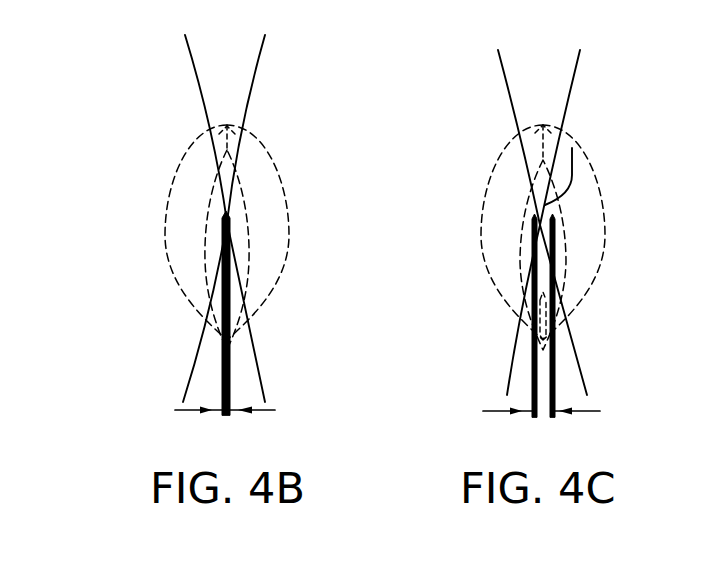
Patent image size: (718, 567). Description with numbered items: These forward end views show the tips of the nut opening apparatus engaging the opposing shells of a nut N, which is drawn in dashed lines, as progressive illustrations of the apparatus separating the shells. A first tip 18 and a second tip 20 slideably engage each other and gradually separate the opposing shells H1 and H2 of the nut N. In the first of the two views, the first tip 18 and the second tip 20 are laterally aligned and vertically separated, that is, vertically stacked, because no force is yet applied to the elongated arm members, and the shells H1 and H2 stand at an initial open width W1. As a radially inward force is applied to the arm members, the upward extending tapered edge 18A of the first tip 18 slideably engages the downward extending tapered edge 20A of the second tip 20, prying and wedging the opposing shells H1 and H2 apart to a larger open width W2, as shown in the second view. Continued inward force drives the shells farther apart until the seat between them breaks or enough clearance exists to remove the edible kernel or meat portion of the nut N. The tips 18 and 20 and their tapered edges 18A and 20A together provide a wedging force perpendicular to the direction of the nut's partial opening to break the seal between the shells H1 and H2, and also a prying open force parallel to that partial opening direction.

In FIG. 4B, the first tip 18 is at (212, 77).
In FIG. 4C, the first tip 18 is at (517, 72).
In FIG. 4C, the upward extending tapered edge 18A is at (572, 148).
In FIG. 4B, the second tip 20 is at (212, 368).
In FIG. 4C, the second tip 20 is at (527, 360).
In FIG. 4C, the downward extending tapered edge 20A is at (538, 251).
In FIG. 4B, the nut N is at (167, 218).
In FIG. 4C, the nut N is at (482, 220).
In FIG. 4B, the shell H1 is at (170, 275).
In FIG. 4C, the shell H1 is at (490, 283).
In FIG. 4B, the shell H2 is at (282, 187).
In FIG. 4C, the shell H2 is at (598, 187).
In FIG. 4B, the initial open width W1 is at (225, 425).
In FIG. 4C, the open width W2 is at (541, 426).